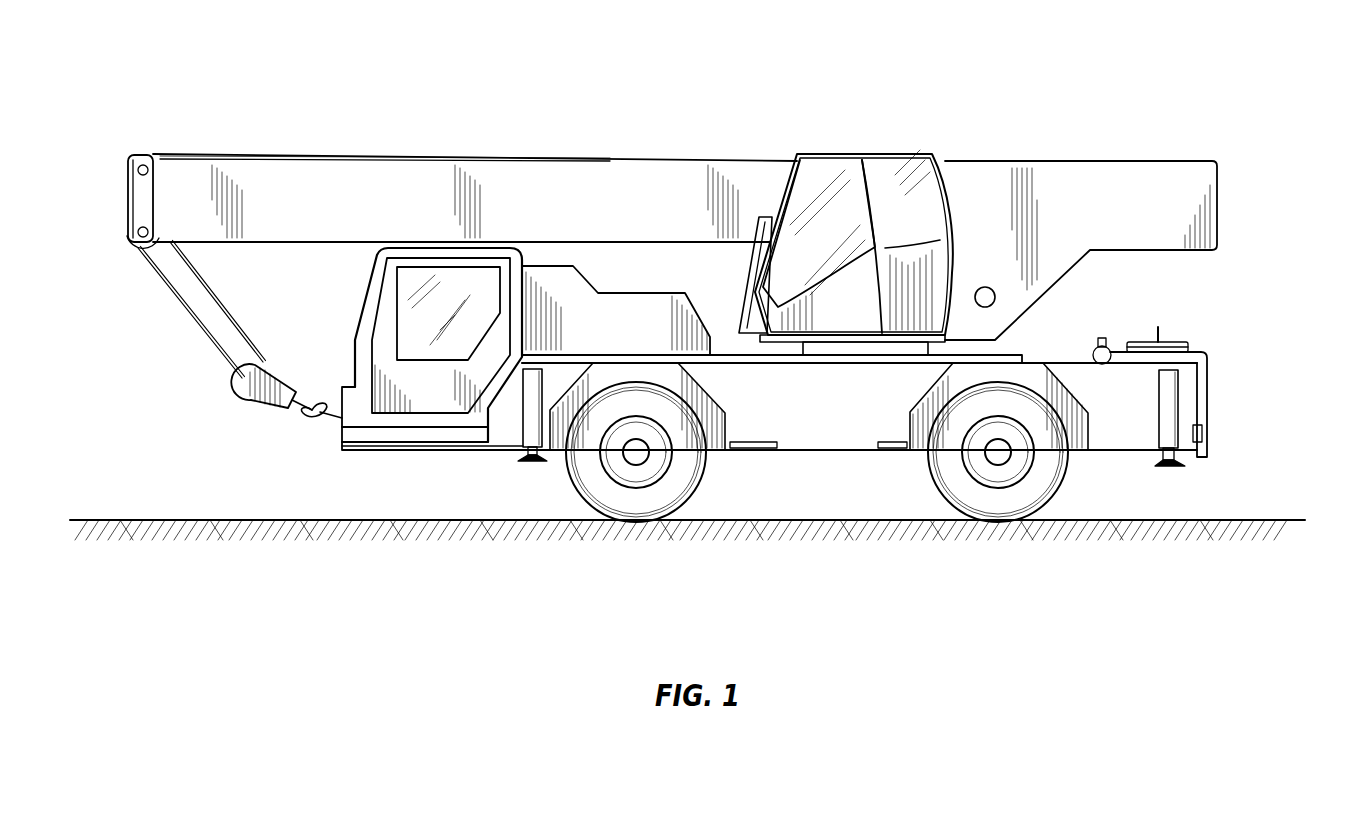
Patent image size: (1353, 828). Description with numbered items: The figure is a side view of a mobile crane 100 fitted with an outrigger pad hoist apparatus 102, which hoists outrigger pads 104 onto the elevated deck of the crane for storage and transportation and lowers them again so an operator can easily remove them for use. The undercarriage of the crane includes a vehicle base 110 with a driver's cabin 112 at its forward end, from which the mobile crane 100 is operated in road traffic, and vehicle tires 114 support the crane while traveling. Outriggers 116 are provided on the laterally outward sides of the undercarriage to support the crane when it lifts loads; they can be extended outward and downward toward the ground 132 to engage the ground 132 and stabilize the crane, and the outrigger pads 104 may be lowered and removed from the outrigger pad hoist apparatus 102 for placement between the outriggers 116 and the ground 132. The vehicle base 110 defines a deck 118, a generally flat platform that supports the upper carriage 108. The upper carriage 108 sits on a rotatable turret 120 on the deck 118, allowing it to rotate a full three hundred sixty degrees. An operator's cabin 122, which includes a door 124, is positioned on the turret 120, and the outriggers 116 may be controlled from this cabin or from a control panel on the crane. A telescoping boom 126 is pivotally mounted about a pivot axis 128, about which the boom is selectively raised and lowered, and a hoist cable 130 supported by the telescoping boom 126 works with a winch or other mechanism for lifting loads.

The mobile crane 100 is at (1094, 77).
The outrigger pad hoist apparatus 102 is at (1205, 393).
The outrigger pads 104 is at (1182, 345).
The upper carriage 108 is at (1233, 178).
The vehicle base 110 is at (326, 428).
The driver's cabin 112 is at (415, 297).
The vehicle tires 114 is at (613, 502).
The outriggers 116 is at (1165, 407).
The deck 118 is at (1012, 355).
The rotatable turret 120 is at (877, 347).
The operator's cabin 122 is at (905, 170).
The door 124 is at (810, 172).
The telescoping boom 126 is at (248, 172).
The pivot axis 128 is at (987, 287).
The hoist cable 130 is at (183, 312).
The ground 132 is at (790, 542).